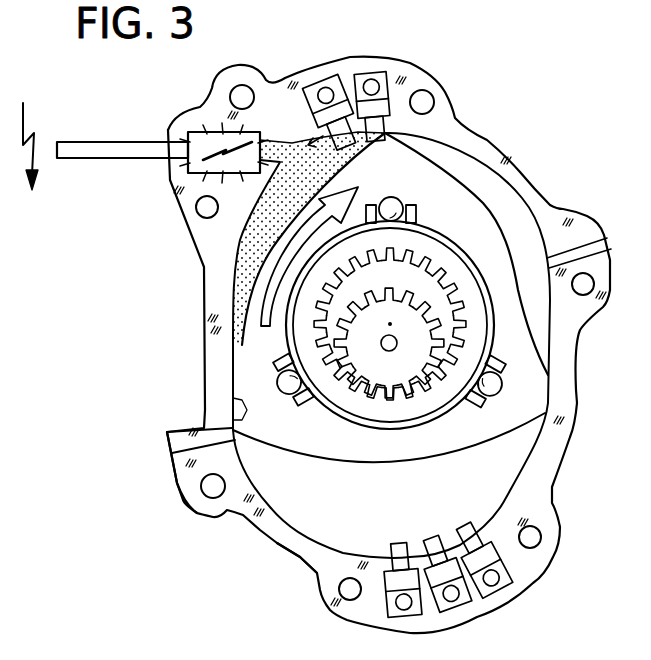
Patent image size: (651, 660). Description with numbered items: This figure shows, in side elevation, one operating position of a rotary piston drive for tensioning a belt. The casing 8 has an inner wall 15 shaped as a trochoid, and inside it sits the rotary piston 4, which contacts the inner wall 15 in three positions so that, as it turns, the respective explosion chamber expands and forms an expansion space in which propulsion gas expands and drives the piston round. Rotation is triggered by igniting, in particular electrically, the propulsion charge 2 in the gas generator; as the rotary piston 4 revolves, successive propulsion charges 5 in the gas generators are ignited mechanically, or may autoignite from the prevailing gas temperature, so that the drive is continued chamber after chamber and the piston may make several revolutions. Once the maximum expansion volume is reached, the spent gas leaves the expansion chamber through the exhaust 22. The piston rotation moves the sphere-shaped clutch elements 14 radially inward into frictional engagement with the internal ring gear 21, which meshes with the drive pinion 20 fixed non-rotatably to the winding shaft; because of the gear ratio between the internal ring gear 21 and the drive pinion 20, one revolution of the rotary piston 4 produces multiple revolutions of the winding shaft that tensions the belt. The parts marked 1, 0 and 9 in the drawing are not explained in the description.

The drive shaft 1 is at (97, 152).
The propulsion charge 2 is at (200, 133).
The propulsion charges 5 is at (374, 85).
The clutch elements 14 is at (400, 196).
The rotary piston 4 is at (472, 212).
The drive pinion 20 is at (413, 327).
The lubricant chamber 0 is at (233, 297).
The internal ring gear 21 is at (302, 327).
The gear housing 9 is at (490, 324).
The casing 8 is at (568, 423).
The exhaust 22 is at (178, 452).
The inner wall 15 is at (315, 535).